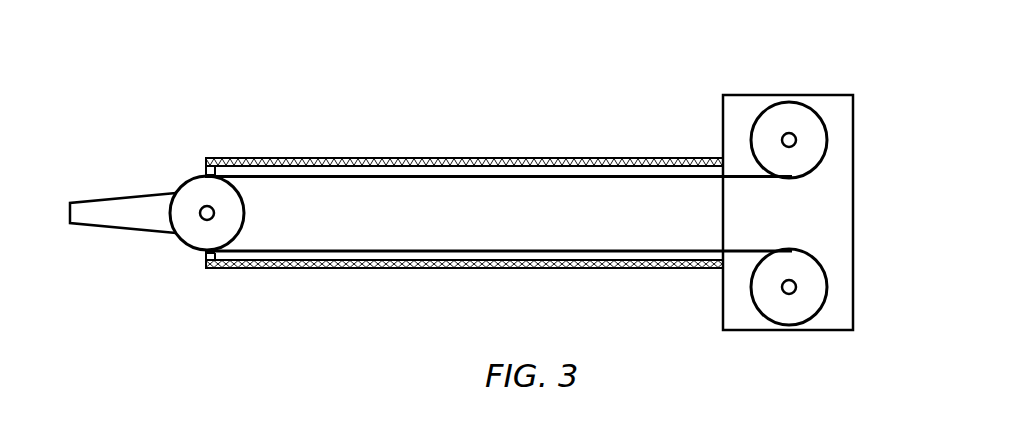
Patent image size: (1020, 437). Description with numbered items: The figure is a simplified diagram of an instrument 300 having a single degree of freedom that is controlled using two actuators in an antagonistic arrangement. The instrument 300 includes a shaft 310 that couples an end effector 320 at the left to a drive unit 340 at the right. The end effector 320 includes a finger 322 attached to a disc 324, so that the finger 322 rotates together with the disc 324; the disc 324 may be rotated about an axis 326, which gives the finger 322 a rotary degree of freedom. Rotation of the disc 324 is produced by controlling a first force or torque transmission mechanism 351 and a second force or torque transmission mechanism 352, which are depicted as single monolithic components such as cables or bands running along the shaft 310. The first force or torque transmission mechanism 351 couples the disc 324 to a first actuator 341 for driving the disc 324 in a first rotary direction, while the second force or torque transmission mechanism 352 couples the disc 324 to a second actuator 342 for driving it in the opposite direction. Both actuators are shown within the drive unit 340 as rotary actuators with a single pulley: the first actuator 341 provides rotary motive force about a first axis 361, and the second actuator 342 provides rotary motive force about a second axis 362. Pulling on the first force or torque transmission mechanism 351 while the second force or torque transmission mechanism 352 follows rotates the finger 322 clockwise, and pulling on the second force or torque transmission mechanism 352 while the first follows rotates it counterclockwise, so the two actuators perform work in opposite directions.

The instrument 300 is at (78, 49).
The end effector 320 is at (227, 123).
The finger 322 is at (135, 195).
The disc 324 is at (187, 183).
The axis 326 is at (202, 218).
The shaft 310 is at (418, 268).
The first force or torque transmission mechanism 351 is at (307, 178).
The second force or torque transmission mechanism 352 is at (527, 250).
The drive unit 340 is at (853, 202).
The first actuator 341 is at (765, 112).
The second actuator 342 is at (770, 319).
The first axis 361 is at (782, 139).
The second axis 362 is at (784, 291).